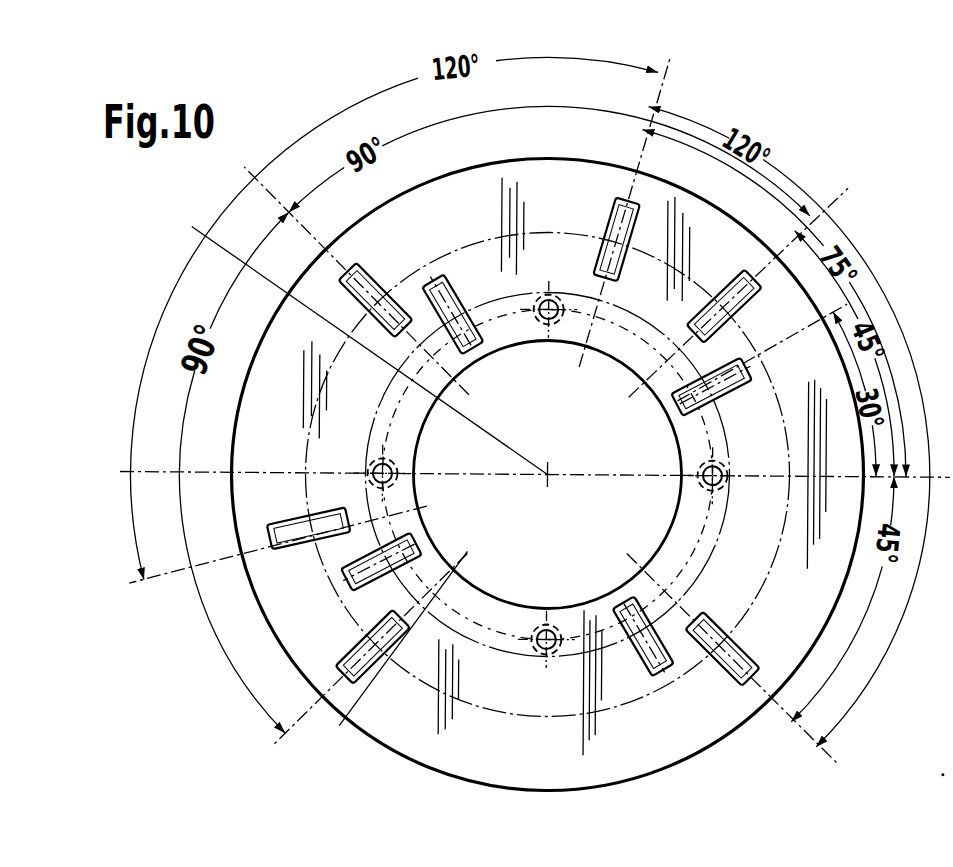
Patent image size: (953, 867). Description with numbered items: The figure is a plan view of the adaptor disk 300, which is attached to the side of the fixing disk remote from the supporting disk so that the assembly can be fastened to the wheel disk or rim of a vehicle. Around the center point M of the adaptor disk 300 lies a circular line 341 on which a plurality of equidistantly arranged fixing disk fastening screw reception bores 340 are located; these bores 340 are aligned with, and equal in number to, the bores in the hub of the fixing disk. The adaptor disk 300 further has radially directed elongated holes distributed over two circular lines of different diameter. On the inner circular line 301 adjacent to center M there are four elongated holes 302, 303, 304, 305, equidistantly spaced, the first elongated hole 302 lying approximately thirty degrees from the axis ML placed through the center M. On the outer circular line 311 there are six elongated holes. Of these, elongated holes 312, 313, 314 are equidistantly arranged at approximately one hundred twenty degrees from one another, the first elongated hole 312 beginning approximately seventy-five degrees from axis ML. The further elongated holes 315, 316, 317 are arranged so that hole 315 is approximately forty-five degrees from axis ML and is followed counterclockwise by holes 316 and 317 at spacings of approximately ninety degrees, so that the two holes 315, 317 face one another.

The adaptor disk 300 is at (342, 760).
The inner circular line 301 is at (672, 600).
The first elongated hole 302 is at (745, 370).
The elongated hole 303 is at (446, 288).
The elongated hole 304 is at (360, 572).
The elongated hole 305 is at (655, 662).
The outer circular line 311 is at (444, 668).
The first elongated hole 312 is at (625, 200).
The elongated hole 313 is at (295, 540).
The elongated hole 314 is at (733, 672).
The first elongated hole 315 is at (744, 282).
The elongated hole 316 is at (353, 265).
The elongated hole 317 is at (343, 655).
The fixing disk fastening screw reception bores 340 is at (538, 301).
The circular line 341 is at (385, 655).
The center point M is at (355, 333).
The axis ML is at (192, 473).